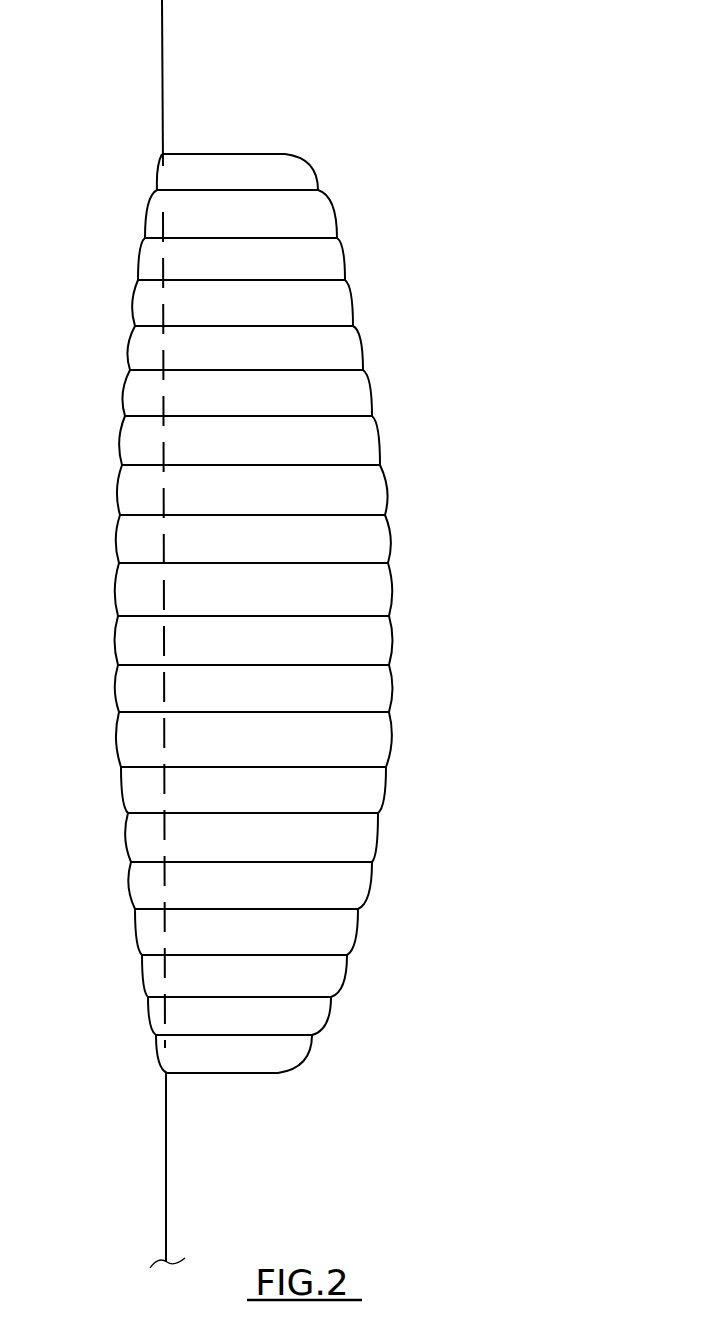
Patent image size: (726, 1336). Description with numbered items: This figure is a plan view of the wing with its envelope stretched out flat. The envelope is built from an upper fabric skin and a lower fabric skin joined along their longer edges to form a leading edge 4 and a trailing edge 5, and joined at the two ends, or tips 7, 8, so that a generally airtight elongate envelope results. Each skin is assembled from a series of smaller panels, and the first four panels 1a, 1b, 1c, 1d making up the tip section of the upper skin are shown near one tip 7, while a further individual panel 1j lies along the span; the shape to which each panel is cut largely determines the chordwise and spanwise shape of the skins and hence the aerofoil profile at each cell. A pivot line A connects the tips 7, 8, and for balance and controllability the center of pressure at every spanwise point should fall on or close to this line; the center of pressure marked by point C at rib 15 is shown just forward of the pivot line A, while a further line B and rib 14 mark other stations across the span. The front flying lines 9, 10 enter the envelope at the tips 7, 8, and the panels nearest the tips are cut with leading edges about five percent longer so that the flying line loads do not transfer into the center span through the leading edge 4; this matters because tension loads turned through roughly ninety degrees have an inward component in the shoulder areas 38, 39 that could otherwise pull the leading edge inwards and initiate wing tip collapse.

The front flying line 10 is at (154, 63).
The front flying line 9 is at (155, 1177).
The wing tip 8 is at (229, 147).
The wing tip 7 is at (215, 1084).
The shoulder area 38 is at (124, 188).
The shoulder area 39 is at (214, 1005).
The pivot line A is at (154, 429).
The position B is at (154, 554).
The center of pressure C is at (153, 988).
The dividing plane 14 is at (334, 556).
The rib 15 is at (303, 1002).
The trailing edge 5 is at (400, 708).
The leading edge 4 is at (267, 612).
The individual panel 1j is at (254, 688).
The upper skin panel 1d is at (246, 932).
The upper skin panel 1c is at (244, 976).
The upper skin panel 1b is at (239, 1016).
The upper skin panel 1a is at (234, 1054).